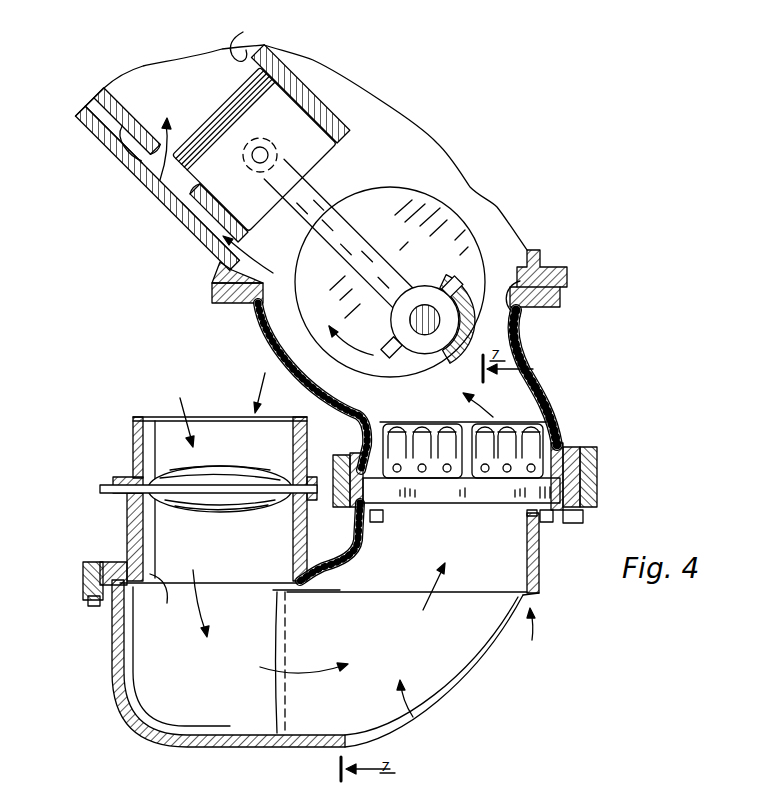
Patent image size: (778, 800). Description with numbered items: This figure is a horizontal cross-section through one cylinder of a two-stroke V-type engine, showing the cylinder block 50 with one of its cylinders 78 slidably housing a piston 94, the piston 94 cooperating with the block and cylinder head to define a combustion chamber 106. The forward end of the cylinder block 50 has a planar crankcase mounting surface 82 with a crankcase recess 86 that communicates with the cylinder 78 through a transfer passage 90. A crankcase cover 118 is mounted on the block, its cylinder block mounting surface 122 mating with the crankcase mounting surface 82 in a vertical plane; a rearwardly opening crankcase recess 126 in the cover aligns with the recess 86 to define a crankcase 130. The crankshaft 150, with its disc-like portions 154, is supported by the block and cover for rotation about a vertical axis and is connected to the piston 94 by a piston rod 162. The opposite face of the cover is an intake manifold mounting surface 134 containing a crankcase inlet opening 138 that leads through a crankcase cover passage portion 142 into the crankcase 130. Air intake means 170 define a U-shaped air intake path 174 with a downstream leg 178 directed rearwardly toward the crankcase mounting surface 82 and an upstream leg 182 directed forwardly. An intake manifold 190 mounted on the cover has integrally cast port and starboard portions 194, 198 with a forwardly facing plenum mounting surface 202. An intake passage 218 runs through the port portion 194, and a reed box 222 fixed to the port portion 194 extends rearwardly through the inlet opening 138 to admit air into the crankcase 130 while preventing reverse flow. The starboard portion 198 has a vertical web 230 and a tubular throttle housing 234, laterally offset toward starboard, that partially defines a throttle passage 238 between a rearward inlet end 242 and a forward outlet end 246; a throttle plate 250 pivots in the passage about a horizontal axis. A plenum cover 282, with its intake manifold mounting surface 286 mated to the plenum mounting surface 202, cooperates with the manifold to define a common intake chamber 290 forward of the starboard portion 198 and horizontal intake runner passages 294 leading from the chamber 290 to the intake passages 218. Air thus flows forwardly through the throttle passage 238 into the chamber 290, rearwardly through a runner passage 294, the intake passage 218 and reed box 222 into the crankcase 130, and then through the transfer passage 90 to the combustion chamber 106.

The cylinder block 50 is at (192, 232).
The cylinder 78 is at (249, 38).
The crankcase mounting surface 82 is at (567, 295).
The crankcase recess 86 is at (522, 318).
The transfer passage 90 is at (175, 193).
The piston 94 is at (278, 138).
The combustion chamber 106 is at (208, 91).
The crankcase cover 118 is at (531, 378).
The cylinder block mounting surface 122 is at (222, 277).
The crankcase recess 126 is at (283, 310).
The crankcase 130 is at (428, 406).
The intake manifold mounting surface 134 is at (590, 482).
The crankcase inlet opening 138 is at (565, 440).
The crankcase cover passage portion 142 is at (550, 418).
The crankshaft 150 is at (433, 220).
The disc-like portion 154 is at (417, 191).
The piston rod 162 is at (317, 193).
The air intake means 170 is at (536, 638).
The U-shaped air intake path 174 is at (413, 717).
The downstream leg 178 is at (470, 574).
The upstream leg 182 is at (243, 551).
The intake manifold 190 is at (539, 562).
The port portion 194 is at (597, 505).
The starboard portion 198 is at (115, 567).
The plenum mounting surface 202 is at (533, 598).
The intake passage 218 is at (360, 553).
The reed box 222 is at (597, 493).
The web 230 is at (278, 592).
The throttle housing 234 is at (133, 512).
The throttle passage 238 is at (160, 445).
The inlet end 242 is at (153, 423).
The outlet end 246 is at (160, 583).
The throttle plate 250 is at (241, 465).
The plenum cover 282 is at (465, 682).
The intake manifold mounting surface 286 is at (83, 578).
The common intake chamber 290 is at (224, 668).
The intake runner passage 294 is at (369, 641).